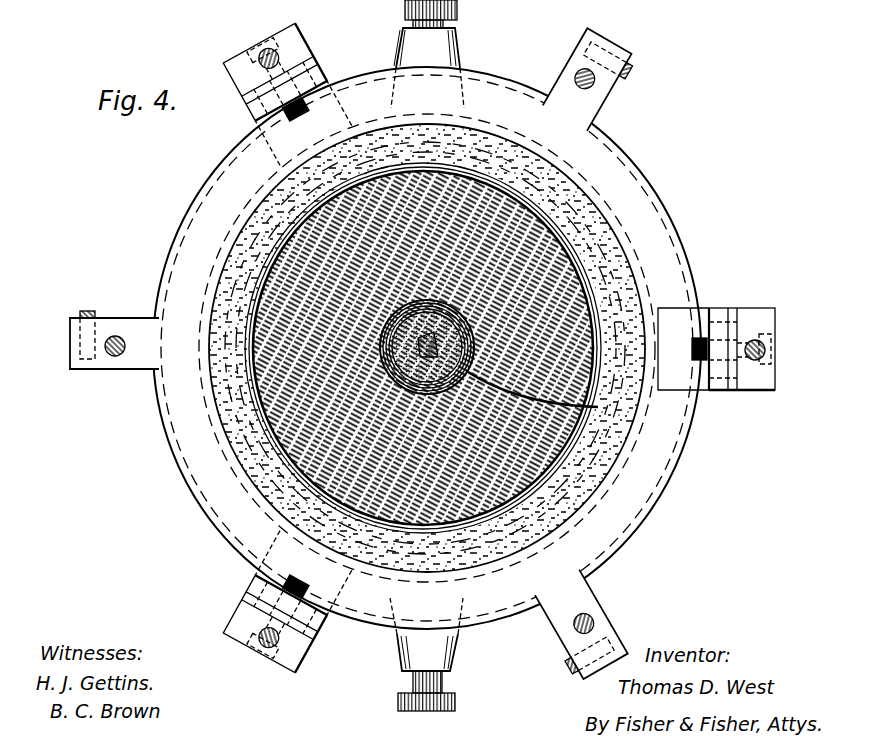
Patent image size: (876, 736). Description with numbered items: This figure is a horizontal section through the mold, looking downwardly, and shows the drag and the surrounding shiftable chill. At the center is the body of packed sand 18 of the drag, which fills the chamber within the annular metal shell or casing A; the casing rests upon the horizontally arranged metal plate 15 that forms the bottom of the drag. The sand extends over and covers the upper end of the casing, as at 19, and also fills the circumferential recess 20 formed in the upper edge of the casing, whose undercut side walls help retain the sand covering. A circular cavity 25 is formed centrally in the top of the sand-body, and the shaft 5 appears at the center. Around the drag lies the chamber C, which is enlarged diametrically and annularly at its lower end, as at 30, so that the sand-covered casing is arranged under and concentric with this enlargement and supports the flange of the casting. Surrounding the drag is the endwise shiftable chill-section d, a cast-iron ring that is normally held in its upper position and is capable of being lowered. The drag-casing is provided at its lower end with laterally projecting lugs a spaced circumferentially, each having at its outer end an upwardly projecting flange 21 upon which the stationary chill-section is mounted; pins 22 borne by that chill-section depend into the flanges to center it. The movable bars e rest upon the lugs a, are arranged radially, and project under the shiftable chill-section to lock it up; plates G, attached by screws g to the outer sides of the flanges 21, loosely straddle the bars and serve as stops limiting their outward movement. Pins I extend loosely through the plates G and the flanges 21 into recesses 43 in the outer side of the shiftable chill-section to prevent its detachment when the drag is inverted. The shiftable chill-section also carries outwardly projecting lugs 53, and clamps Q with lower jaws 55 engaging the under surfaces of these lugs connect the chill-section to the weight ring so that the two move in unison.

The shaft 5 is at (428, 339).
The metal plate 15 is at (236, 142).
The body of packed sand 18 is at (290, 410).
The sand covering of the casing 19 is at (265, 470).
The recess 20 is at (232, 11).
The flanges 21 is at (318, 62).
The pins 22 is at (258, 46).
The circular cavity 25 is at (598, 408).
The diametrical enlargement 30 is at (205, 420).
The recesses 43 is at (294, 106).
The lugs 53 is at (70, 370).
The lower jaws 55 is at (80, 340).
The lugs a is at (322, 80).
The shiftable chill-section d is at (195, 200).
The movable bars e is at (250, 80).
The screws g is at (310, 38).
The annular metal shell or casing A is at (246, 240).
The chamber C is at (540, 478).
The plates G is at (300, 52).
The pins I is at (250, 123).
The clamps Q is at (86, 310).